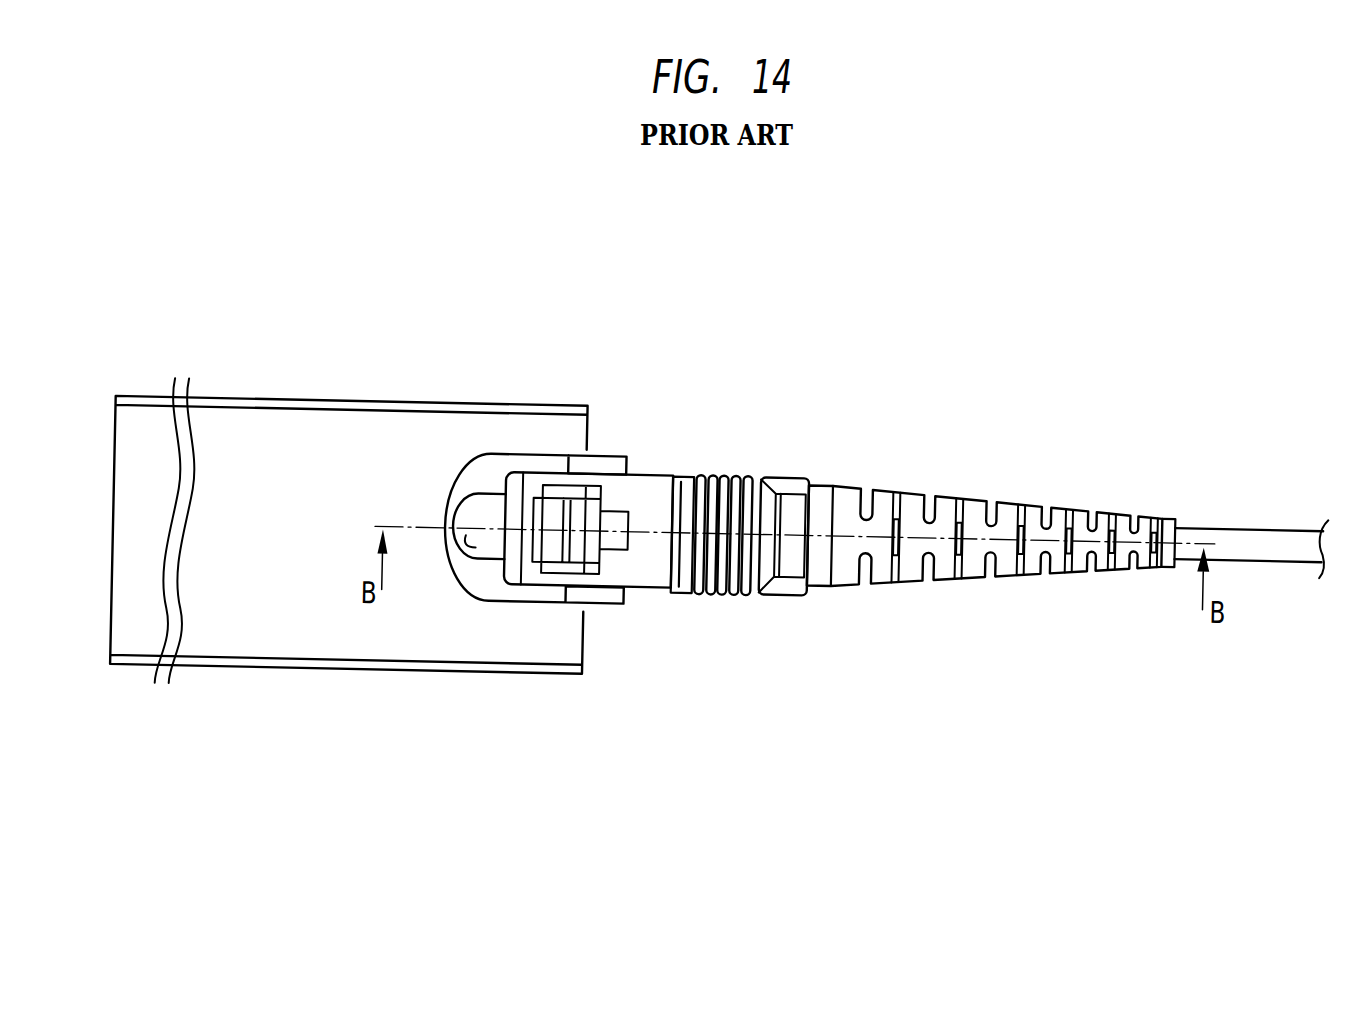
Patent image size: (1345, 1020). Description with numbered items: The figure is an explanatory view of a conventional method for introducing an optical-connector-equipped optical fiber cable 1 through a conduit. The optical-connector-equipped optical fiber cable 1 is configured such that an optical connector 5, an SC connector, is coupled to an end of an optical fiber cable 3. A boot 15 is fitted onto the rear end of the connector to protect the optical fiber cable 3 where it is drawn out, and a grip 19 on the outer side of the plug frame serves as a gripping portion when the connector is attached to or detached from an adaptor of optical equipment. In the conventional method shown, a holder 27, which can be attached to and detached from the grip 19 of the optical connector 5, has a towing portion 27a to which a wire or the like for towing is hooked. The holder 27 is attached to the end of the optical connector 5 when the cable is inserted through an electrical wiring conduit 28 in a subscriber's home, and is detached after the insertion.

The optical-connector-equipped optical fiber cable 1 is at (992, 522).
The optical fiber cable 3 is at (1234, 496).
The optical connector 5 is at (786, 455).
The boot 15 is at (880, 559).
The grip 19 is at (642, 569).
The holder 27 is at (618, 452).
The towing portion 27a is at (472, 541).
The electrical wiring conduit 28 is at (488, 404).